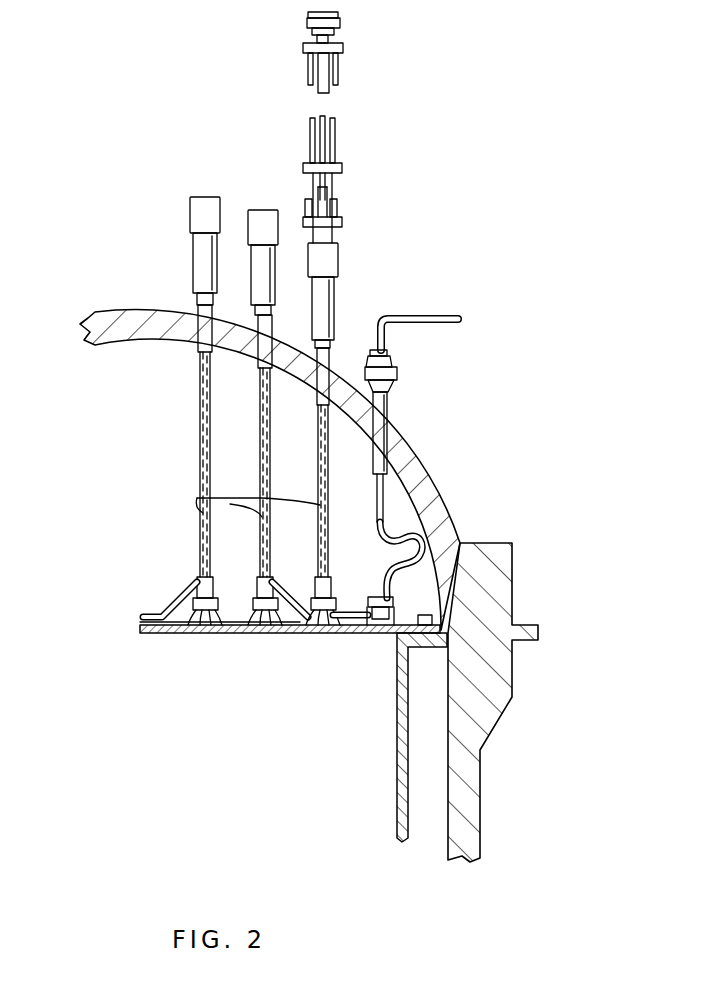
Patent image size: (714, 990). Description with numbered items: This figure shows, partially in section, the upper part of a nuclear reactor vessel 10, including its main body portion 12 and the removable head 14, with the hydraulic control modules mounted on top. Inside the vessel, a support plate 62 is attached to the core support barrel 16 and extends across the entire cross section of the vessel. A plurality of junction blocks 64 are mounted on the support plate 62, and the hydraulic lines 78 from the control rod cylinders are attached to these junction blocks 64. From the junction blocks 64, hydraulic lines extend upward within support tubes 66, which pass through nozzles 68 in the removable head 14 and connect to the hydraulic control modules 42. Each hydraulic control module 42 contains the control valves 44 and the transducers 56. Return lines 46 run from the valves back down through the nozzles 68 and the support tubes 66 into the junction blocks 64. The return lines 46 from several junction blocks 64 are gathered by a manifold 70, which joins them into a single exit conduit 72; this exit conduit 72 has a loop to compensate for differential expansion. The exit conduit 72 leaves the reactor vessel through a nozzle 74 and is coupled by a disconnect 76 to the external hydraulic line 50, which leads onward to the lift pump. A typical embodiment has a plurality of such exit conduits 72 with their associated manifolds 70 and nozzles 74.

The reactor vessel 10 is at (480, 514).
The main body portion 12 is at (505, 688).
The removable head 14 is at (413, 470).
The core support barrel 16 is at (400, 772).
The hydraulic control module 42 is at (262, 270).
The control valve 44 is at (343, 220).
The return line 46 is at (200, 465).
The hydraulic line 50 is at (404, 316).
The transducer 56 is at (306, 163).
The support plate 62 is at (235, 634).
The junction block 64 is at (195, 598).
The support tube 66 is at (197, 498).
The nozzle 68 is at (262, 368).
The manifold 70 is at (392, 603).
The exit conduit 72 is at (378, 527).
The nozzle 74 is at (395, 405).
The disconnect 76 is at (397, 370).
The hydraulic line 78 is at (190, 631).